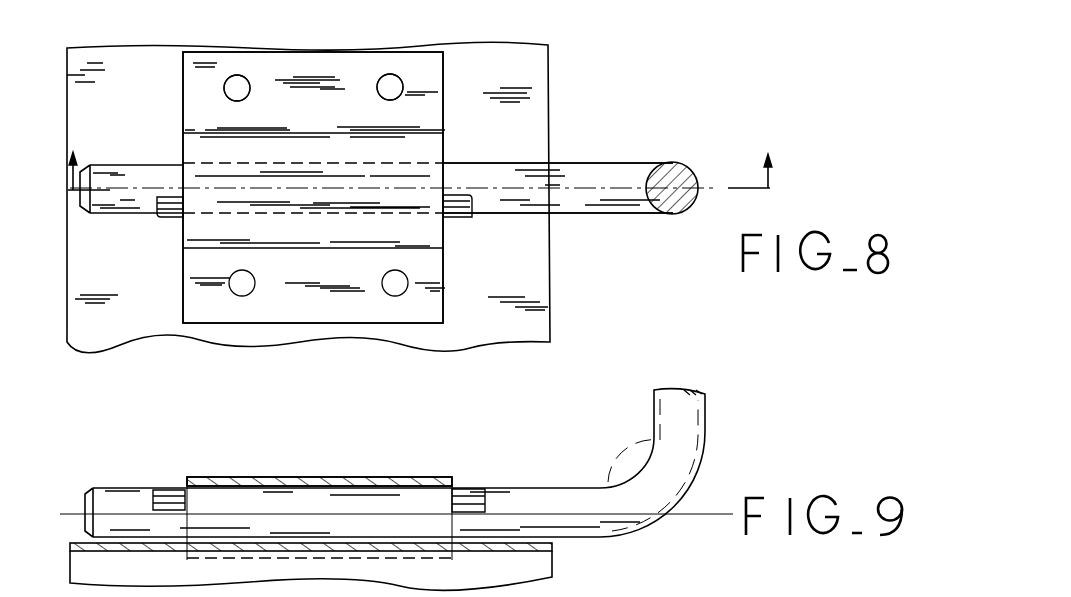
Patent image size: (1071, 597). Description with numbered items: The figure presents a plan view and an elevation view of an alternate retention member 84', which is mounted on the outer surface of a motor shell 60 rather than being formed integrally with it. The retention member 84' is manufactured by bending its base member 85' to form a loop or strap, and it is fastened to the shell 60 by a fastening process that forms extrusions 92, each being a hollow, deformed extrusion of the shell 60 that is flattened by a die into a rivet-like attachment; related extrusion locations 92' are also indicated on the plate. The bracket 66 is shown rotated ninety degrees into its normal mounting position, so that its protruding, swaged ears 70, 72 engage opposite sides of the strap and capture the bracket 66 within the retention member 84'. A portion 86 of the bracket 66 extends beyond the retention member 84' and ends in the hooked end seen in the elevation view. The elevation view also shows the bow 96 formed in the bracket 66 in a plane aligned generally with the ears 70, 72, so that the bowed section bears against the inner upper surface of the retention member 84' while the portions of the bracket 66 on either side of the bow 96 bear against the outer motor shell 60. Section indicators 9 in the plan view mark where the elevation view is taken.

In FIG. 8, the section line 9- 9 is at (421, 160).
In FIG. 9, the motor shell 60 is at (552, 545).
In FIG. 8, the bracket 66 is at (595, 222).
In FIG. 9, the bracket 66 is at (597, 478).
In FIG. 8, the protruding ear 70 is at (170, 218).
In FIG. 9, the protruding ear 70 is at (165, 490).
In FIG. 8, the protruding ear 72 is at (460, 218).
In FIG. 9, the protruding ear 72 is at (470, 489).
In FIG. 8, the retention member 84' is at (356, 164).
In FIG. 9, the retention member 84' is at (319, 494).
In FIG. 8, the base member 85' is at (324, 164).
In FIG. 8, the rod portion 86 is at (505, 175).
In FIG. 8, the extrusion 92 is at (284, 200).
In FIG. 8, the mounting holes 92' is at (303, 52).
In FIG. 9, the bow 96 is at (280, 477).